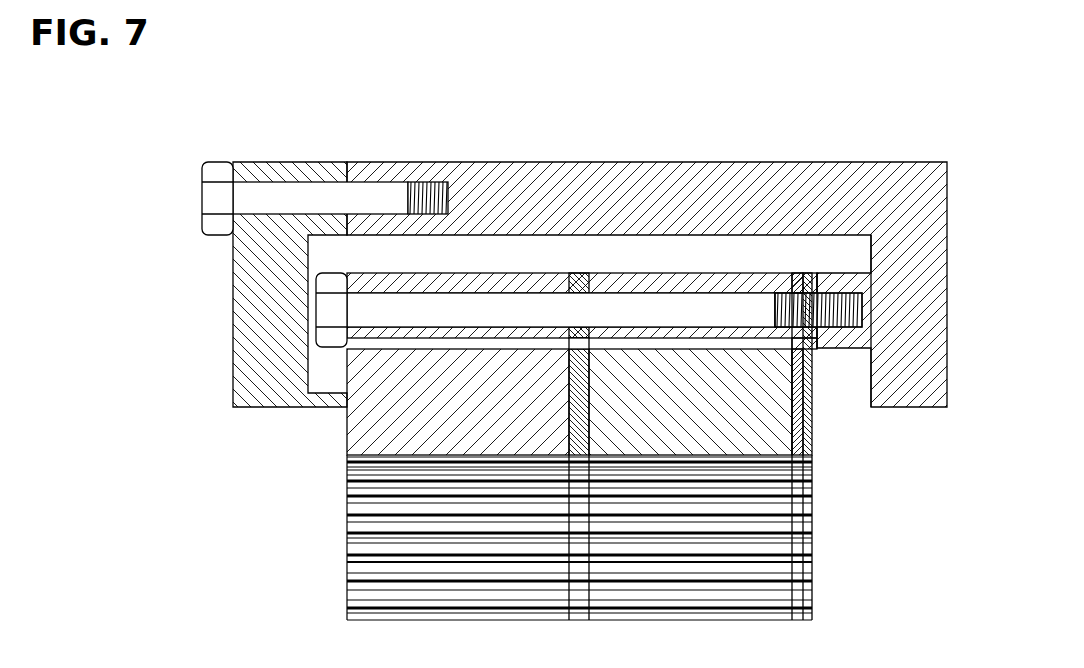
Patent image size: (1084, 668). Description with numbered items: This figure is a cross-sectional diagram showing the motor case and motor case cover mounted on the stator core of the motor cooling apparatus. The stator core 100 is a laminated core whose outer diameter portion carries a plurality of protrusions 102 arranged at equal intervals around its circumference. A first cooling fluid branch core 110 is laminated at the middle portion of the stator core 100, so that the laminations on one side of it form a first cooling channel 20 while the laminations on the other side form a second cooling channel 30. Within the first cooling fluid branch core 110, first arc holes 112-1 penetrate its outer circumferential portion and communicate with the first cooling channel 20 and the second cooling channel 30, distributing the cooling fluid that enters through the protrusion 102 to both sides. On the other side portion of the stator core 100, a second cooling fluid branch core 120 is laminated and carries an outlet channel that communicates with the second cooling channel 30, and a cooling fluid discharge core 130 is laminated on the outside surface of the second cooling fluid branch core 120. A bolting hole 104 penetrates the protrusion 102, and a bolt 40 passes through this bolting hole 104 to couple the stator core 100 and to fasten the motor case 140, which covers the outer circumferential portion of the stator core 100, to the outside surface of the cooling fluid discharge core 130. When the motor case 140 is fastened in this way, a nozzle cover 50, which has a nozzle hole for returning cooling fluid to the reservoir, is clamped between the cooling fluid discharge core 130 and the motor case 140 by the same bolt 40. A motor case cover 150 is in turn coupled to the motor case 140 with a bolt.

The first cooling channel 20 is at (372, 345).
The second cooling channel 30 is at (713, 347).
The bolt 40 is at (358, 305).
The nozzle cover 50 is at (815, 283).
The stator core 100 is at (457, 268).
The protrusion 102 is at (493, 290).
The bolting hole 104 is at (388, 307).
The first cooling fluid branch core 110 is at (577, 268).
The first arc hole 112-1 is at (585, 350).
The second cooling fluid branch core 120 is at (799, 268).
The cooling fluid discharge core 130 is at (814, 411).
The motor case 140 is at (646, 160).
The motor case cover 150 is at (232, 311).